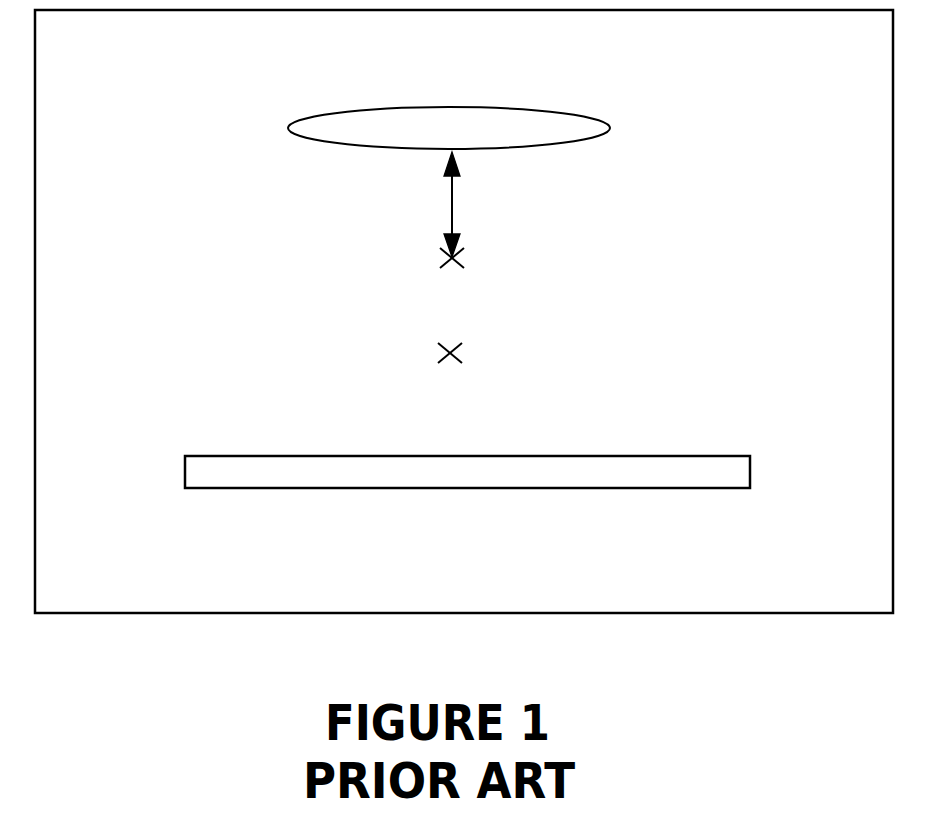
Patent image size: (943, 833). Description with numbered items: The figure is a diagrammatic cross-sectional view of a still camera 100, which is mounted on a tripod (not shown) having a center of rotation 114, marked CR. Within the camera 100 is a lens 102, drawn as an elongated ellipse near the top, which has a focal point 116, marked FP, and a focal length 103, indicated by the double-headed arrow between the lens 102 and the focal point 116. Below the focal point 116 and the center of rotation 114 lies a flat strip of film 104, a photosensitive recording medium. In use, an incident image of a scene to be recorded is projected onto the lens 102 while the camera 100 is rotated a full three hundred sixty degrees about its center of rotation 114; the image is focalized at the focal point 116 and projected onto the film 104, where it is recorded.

The camera 100 is at (793, 613).
The lens 102 is at (568, 110).
The focal length 103 is at (452, 200).
The film 104 is at (750, 468).
The center of rotation 114 is at (440, 354).
The focal point 116 is at (440, 260).